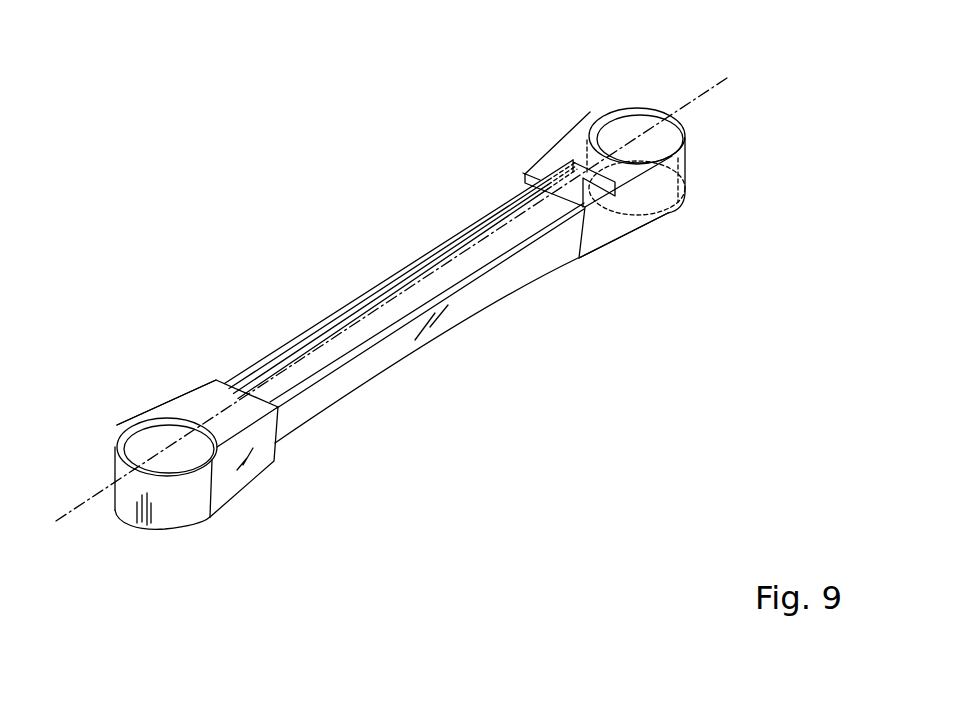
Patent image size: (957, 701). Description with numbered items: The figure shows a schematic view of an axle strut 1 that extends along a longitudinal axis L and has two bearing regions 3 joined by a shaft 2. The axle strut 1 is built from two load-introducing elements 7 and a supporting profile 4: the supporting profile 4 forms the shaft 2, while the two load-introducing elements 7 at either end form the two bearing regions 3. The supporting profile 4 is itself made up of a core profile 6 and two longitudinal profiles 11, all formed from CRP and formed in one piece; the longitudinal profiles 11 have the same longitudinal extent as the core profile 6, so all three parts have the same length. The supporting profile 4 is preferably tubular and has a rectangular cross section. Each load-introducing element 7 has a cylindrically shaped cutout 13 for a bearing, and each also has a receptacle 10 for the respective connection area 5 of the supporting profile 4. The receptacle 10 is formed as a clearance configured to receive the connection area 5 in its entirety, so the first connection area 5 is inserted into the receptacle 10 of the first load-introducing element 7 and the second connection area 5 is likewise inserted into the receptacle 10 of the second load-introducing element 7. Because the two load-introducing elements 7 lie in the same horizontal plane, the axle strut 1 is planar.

The axle strut 1 is at (568, 362).
The shaft 2 is at (377, 283).
The bearing region 3 is at (131, 404).
The supporting profile 4 is at (460, 202).
The connection area 5 is at (607, 220).
The core profile 6 is at (467, 265).
The load-introducing element 7 is at (205, 403).
The receptacle 10 is at (567, 158).
The longitudinal profile 11 is at (307, 332).
The cutout 13 is at (163, 457).
The longitudinal axis L is at (72, 512).